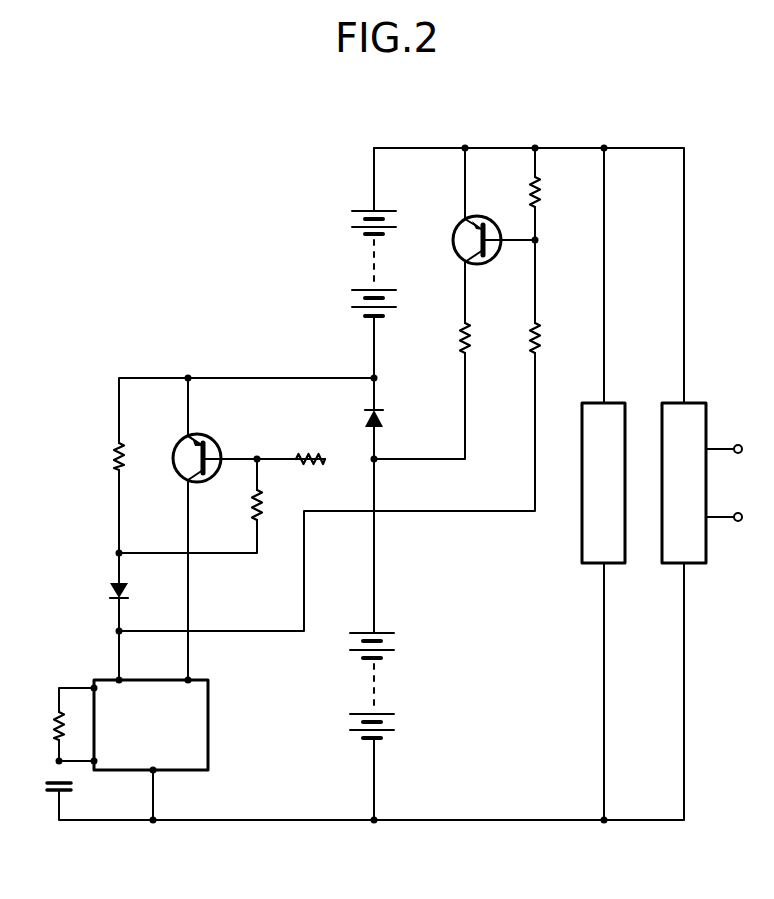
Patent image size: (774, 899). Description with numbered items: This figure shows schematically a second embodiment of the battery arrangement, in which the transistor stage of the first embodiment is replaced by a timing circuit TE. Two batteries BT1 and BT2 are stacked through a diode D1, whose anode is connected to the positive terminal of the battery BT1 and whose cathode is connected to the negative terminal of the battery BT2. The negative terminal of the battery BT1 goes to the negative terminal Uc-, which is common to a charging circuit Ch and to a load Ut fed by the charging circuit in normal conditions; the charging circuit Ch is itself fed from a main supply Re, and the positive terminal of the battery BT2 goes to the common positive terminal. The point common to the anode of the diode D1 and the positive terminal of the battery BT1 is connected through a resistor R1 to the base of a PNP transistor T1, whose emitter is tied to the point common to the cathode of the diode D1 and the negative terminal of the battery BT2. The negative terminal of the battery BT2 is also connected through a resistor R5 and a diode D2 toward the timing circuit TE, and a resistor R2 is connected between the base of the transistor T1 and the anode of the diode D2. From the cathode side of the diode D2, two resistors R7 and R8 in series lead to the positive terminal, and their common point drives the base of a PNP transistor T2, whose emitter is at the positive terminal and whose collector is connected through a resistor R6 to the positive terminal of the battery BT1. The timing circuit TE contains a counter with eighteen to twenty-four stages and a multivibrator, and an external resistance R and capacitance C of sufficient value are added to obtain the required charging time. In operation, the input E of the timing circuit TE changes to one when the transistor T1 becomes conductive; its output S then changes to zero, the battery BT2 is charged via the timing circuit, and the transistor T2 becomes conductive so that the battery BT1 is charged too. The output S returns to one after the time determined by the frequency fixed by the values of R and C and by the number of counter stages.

The negative terminal Uc- is at (605, 841).
The resistor R7 is at (538, 194).
The resistor R8 is at (538, 346).
The resistor R6 is at (463, 350).
The PNP transistor T2 is at (479, 229).
The battery BT2 is at (369, 262).
The battery BT1 is at (382, 688).
The diode D1 is at (386, 421).
The resistor R1 is at (303, 452).
The PNP transistor T1 is at (205, 440).
The resistor R5 is at (113, 471).
The resistor R2 is at (251, 503).
The diode D2 is at (108, 598).
The timing circuit TE is at (190, 748).
The output S is at (110, 670).
The input E is at (195, 670).
The resistance R is at (58, 713).
The capacitance C is at (68, 796).
The load Ut is at (602, 548).
The charging circuit Ch is at (687, 543).
The main supply Re is at (728, 483).